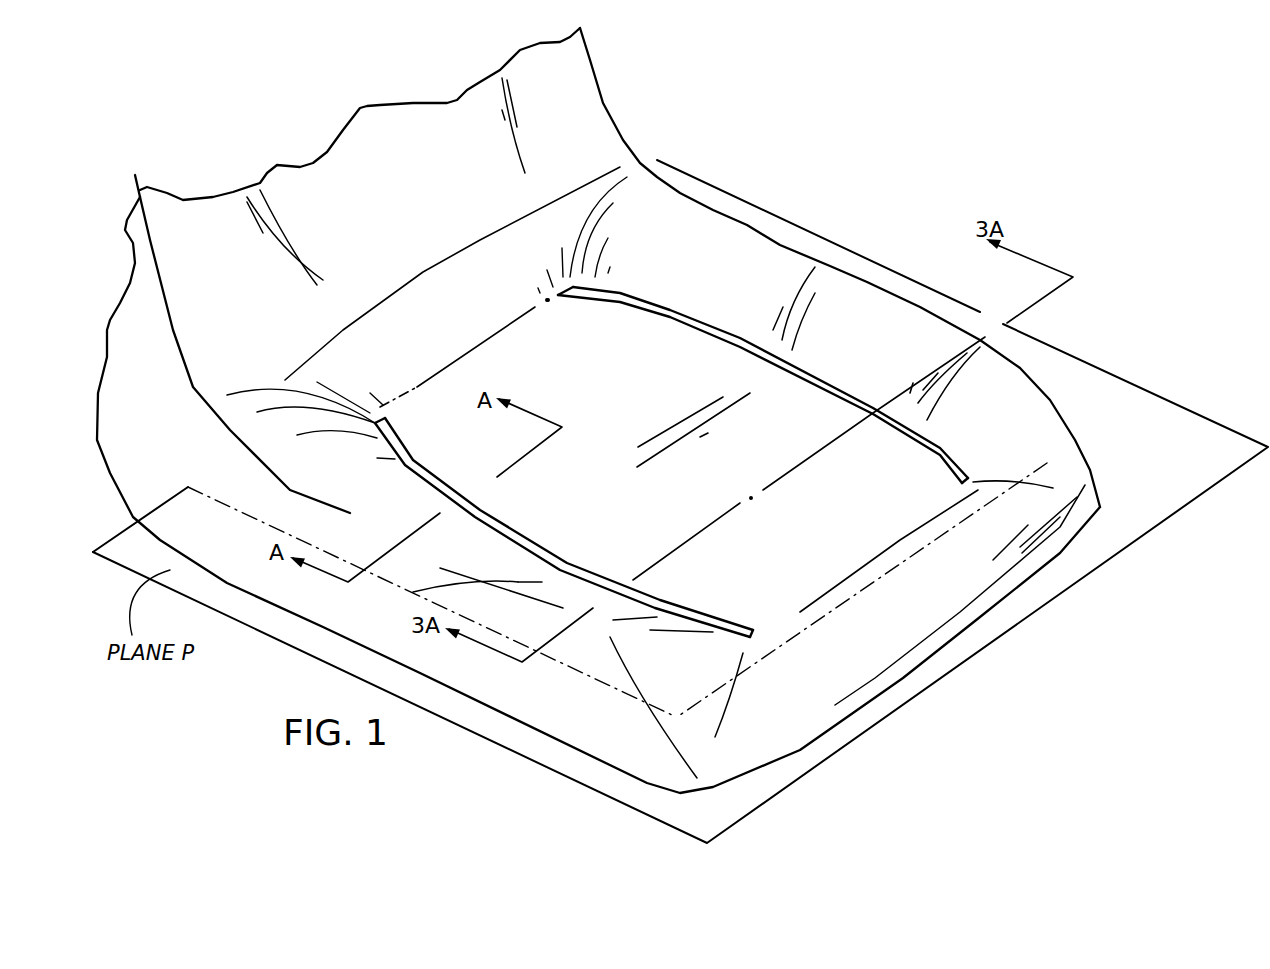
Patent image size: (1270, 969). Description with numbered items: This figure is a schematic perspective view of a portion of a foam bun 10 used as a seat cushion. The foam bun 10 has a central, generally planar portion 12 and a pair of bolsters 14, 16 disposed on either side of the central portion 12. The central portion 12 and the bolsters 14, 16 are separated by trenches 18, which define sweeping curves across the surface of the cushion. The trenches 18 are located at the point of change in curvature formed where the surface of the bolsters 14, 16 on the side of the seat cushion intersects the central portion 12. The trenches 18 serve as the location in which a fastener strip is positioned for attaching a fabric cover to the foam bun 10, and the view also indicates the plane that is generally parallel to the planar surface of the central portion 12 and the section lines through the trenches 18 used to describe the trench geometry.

The foam bun 10 is at (714, 136).
The central portion 12 is at (790, 437).
The bolster 14 is at (732, 250).
The bolster 16 is at (410, 592).
The trenches 18 is at (682, 316).